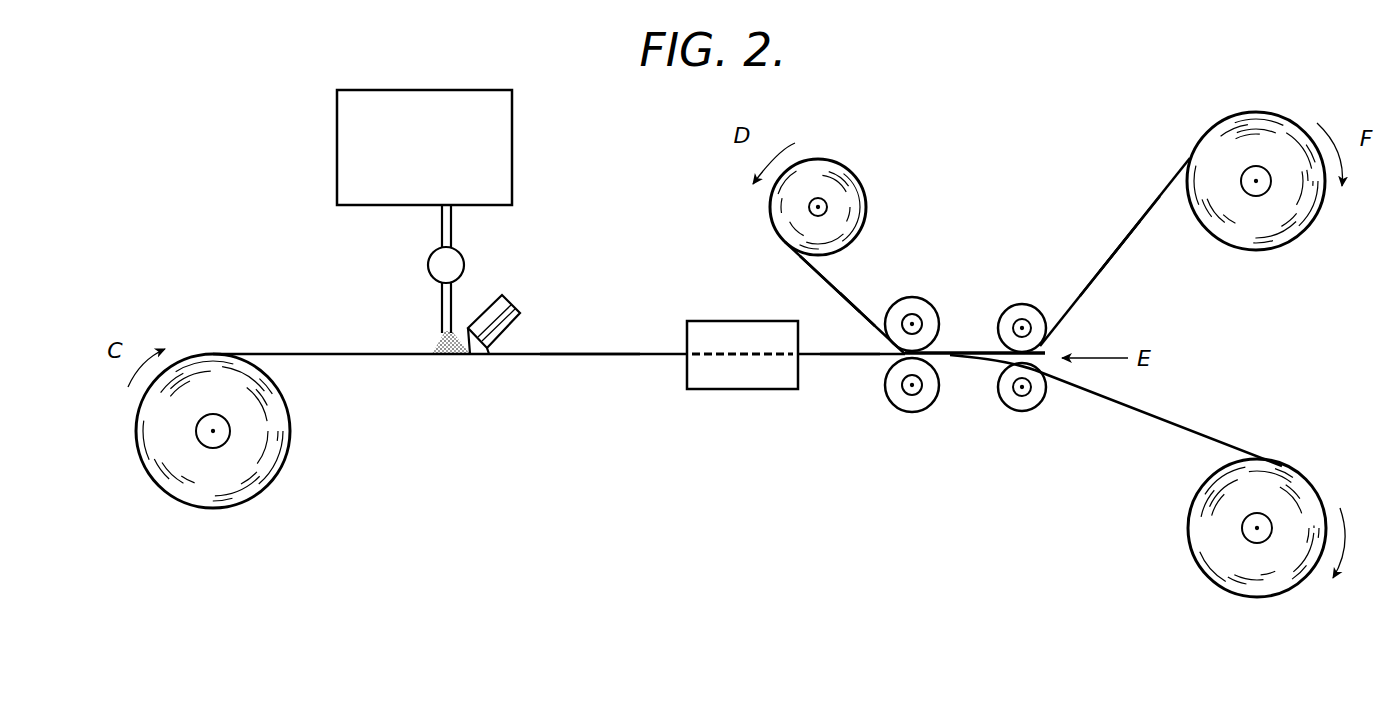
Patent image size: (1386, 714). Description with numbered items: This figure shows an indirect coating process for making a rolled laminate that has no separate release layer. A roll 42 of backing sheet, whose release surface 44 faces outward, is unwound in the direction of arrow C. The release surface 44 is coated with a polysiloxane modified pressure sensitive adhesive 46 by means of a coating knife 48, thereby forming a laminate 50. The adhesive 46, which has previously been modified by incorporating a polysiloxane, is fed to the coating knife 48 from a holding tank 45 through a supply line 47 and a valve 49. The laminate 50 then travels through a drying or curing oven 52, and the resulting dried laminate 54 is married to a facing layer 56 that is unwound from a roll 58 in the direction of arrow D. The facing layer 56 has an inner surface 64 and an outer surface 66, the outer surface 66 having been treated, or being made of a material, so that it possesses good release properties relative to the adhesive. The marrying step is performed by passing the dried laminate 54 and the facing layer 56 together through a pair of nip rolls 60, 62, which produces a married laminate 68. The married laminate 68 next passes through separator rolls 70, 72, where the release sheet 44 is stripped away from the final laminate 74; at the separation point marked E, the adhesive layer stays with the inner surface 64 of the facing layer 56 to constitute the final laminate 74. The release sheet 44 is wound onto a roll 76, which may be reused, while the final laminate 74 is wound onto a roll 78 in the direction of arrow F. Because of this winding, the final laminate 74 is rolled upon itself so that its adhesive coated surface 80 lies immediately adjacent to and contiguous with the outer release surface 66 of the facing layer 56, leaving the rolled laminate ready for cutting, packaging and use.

The roll 42 is at (292, 430).
The release surface 44 is at (348, 351).
The holding tank 45 is at (337, 138).
The polysiloxane modified pressure sensitive adhesive 46 is at (495, 100).
The supply line 47 is at (441, 316).
The coating knife 48 is at (514, 306).
The valve 49 is at (461, 257).
The laminate 50 is at (598, 360).
The drying or curing oven 52 is at (753, 392).
The dried laminate 54 is at (866, 359).
The facing layer 56 is at (832, 276).
The roll 58 is at (855, 172).
The nip roll 60 is at (931, 304).
The nip roll 62 is at (904, 409).
The inner surface 64 is at (814, 291).
The outer surface 66 is at (858, 306).
The married laminate 68 is at (948, 359).
The separator roll 70 is at (1022, 304).
The separator roll 72 is at (1038, 405).
The final laminate 74 is at (1128, 234).
The roll 76 is at (1189, 520).
The roll 78 is at (1229, 113).
The adhesive coated surface 80 is at (1121, 250).